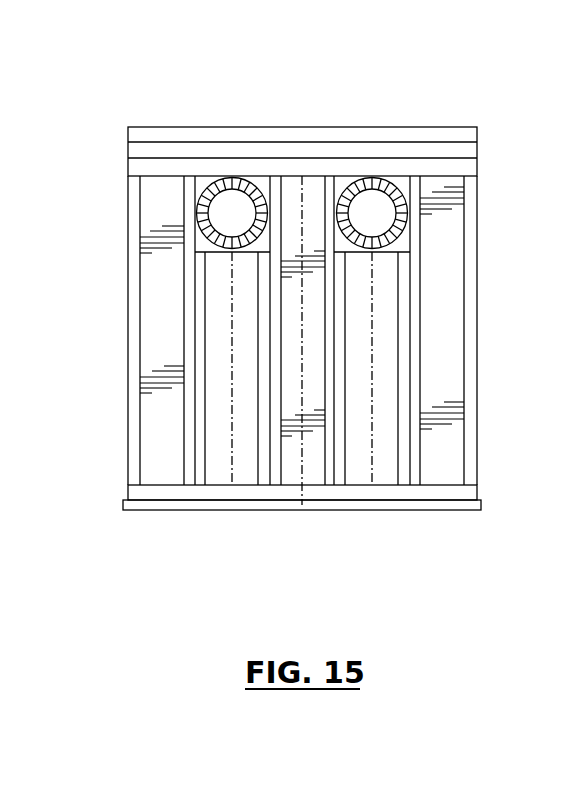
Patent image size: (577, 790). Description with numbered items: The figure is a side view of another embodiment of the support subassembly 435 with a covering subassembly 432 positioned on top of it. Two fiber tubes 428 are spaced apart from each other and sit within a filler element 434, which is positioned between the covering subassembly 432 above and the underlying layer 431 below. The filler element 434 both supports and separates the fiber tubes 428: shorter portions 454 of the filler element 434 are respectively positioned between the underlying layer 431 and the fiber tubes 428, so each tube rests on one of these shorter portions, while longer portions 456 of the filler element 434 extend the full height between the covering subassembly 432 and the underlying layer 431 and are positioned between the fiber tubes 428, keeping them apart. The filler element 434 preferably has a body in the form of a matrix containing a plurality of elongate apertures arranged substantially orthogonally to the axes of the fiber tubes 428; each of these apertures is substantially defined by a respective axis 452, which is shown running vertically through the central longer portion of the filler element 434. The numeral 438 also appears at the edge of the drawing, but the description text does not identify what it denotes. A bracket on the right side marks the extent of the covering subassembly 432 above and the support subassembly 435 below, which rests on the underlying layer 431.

The fiber tube 428 is at (199, 213).
The underlying layer 431 is at (286, 326).
The covering subassembly 432 is at (498, 127).
The filler element 434 is at (128, 373).
The support subassembly 435 is at (286, 321).
The member 438 is at (7, 261).
The axis of aperture 452 is at (312, 184).
The shorter portion of filler element 454 is at (216, 470).
The longer portion of filler element 456 is at (315, 470).